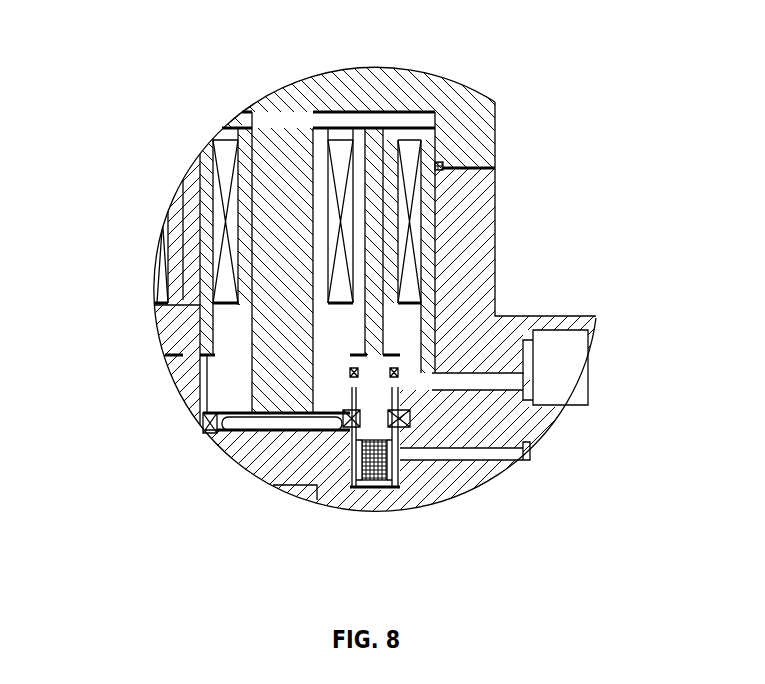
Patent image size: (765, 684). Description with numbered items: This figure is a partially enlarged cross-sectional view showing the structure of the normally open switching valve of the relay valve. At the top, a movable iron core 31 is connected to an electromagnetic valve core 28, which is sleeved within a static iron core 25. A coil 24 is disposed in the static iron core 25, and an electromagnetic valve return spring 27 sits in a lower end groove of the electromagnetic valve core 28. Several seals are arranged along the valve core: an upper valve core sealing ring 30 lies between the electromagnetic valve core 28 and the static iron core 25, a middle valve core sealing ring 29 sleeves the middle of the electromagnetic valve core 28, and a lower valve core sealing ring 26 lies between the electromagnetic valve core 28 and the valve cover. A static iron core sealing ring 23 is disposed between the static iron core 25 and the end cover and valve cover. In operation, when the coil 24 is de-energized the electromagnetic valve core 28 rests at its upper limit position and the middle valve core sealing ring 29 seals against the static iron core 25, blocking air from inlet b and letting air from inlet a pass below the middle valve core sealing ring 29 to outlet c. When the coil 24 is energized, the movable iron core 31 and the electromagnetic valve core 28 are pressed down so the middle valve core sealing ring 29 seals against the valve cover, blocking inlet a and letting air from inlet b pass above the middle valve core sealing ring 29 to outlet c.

The static iron core sealing ring 23 is at (441, 164).
The coil 24 is at (410, 243).
The static iron core 25 is at (408, 335).
The lower valve core sealing ring 26 is at (530, 447).
The electromagnetic valve return spring 27 is at (352, 460).
The electromagnetic valve core 28 is at (240, 420).
The middle valve core sealing ring 29 is at (357, 410).
The upper valve core sealing ring 30 is at (355, 373).
The movable iron core 31 is at (335, 122).